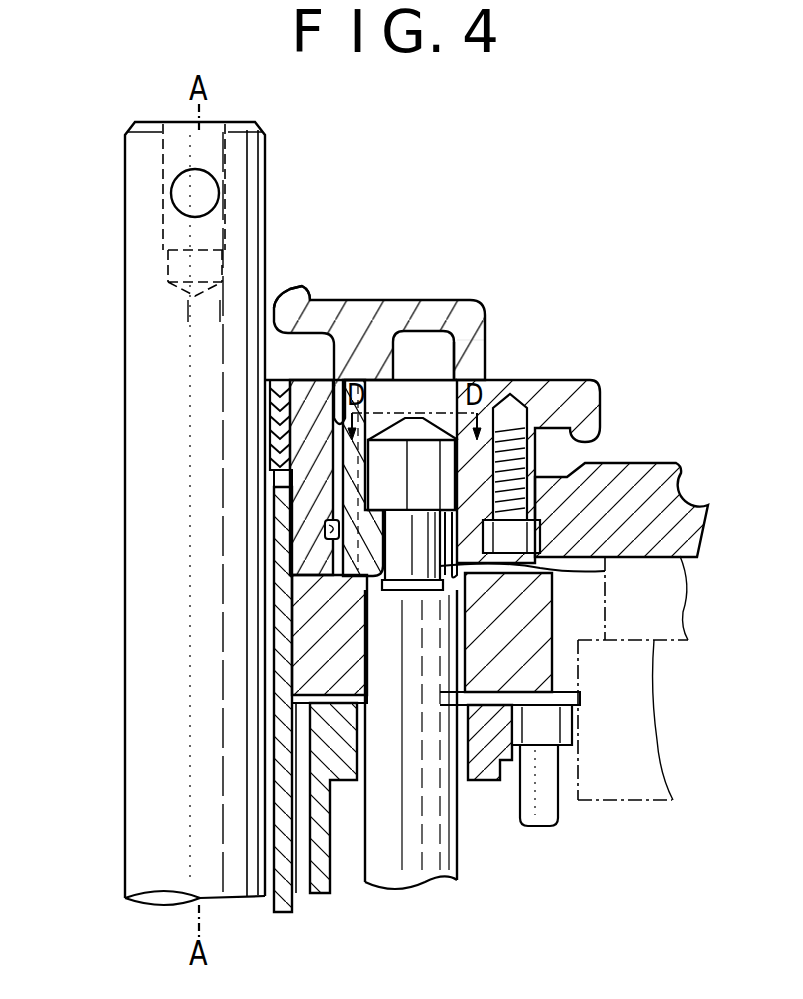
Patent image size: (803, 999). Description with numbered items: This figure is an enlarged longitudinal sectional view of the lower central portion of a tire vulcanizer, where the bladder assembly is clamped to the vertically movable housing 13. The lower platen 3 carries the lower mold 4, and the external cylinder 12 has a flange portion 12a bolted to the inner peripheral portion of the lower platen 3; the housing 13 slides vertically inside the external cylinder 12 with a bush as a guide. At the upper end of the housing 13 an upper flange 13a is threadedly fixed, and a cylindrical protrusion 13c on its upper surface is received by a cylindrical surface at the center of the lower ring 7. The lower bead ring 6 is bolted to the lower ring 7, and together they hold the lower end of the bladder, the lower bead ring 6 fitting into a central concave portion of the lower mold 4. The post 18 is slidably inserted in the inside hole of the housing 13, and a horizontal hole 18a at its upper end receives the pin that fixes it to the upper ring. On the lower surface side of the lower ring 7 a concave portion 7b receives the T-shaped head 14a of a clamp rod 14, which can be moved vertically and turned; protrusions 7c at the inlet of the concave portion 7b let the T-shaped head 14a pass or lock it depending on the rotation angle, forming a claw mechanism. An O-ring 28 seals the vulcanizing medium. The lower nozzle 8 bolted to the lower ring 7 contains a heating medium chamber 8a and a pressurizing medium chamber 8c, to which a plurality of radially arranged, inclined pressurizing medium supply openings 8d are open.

The lower platen 3 is at (656, 778).
The lower mold 4 is at (680, 615).
The lower bead ring 6 is at (688, 490).
The lower ring 7 is at (598, 385).
The concave portion 7b is at (470, 372).
The protrusions 7c is at (605, 571).
The lower nozzle 8 is at (397, 300).
The heating medium chamber 8a is at (320, 320).
The pressurizing medium chamber 8c is at (432, 320).
The pressurizing medium supply openings 8d is at (478, 335).
The external cylinder 12 is at (338, 868).
The flange portion 12a is at (497, 776).
The housing 13 is at (285, 903).
The upper flange 13a is at (540, 675).
The cylindrical protrusion 13c is at (272, 425).
The clamp rod 14 is at (455, 869).
The T-shaped head 14a is at (528, 440).
The post 18 is at (124, 406).
The horizontal hole 18a is at (207, 190).
The O-ring 28 is at (325, 530).